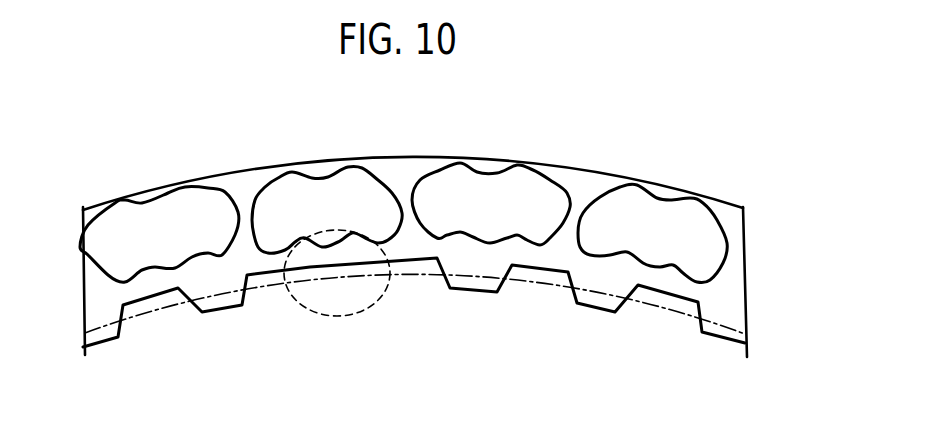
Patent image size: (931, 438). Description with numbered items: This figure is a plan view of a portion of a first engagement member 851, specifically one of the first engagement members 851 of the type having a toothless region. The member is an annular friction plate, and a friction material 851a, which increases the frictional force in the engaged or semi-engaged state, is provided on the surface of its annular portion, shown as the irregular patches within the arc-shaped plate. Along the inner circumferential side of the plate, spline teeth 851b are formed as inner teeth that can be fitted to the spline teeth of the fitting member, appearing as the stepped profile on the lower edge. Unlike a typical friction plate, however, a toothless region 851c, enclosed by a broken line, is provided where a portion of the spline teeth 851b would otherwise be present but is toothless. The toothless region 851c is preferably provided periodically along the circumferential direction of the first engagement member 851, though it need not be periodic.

The first engagement member 851 is at (557, 310).
The friction material 851a is at (658, 226).
The spline teeth 851b is at (715, 316).
The toothless region 851c is at (337, 317).